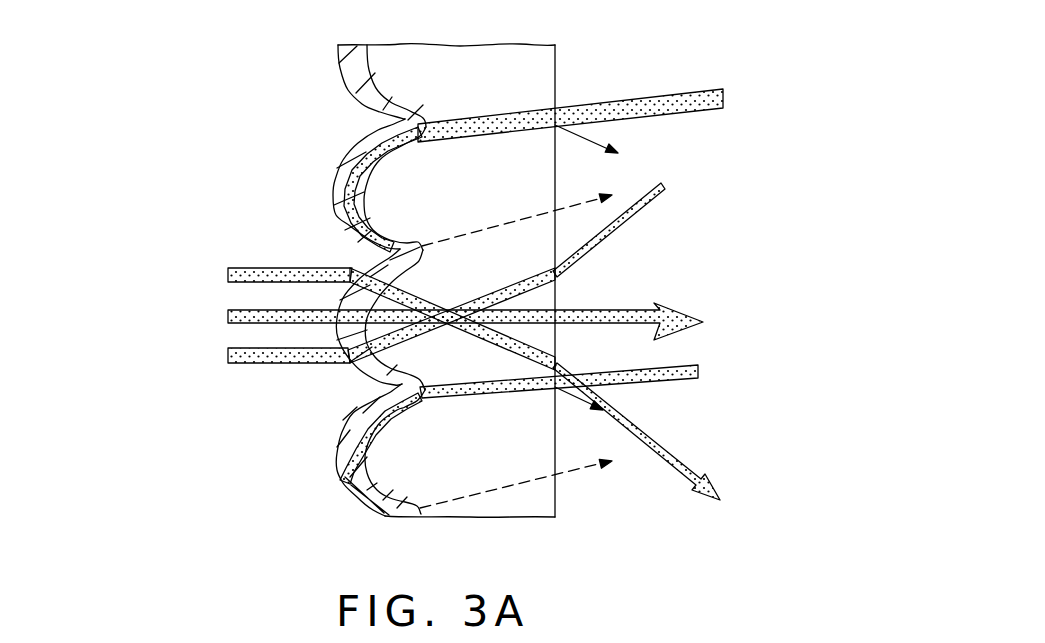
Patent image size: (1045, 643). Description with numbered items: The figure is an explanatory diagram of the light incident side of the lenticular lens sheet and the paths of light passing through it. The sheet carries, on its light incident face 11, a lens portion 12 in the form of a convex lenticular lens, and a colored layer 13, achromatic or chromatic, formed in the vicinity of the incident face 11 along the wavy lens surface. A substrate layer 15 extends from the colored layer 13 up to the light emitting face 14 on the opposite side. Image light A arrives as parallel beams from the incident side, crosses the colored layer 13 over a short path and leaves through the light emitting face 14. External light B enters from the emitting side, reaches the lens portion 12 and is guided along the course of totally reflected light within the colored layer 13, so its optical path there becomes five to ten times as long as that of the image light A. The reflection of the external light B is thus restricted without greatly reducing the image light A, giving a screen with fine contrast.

The light incident face 11 is at (335, 310).
The lens portion 12 is at (335, 496).
The colored layer 13 is at (380, 495).
The light emitting face 14 is at (557, 495).
The substrate layer 15 is at (543, 73).
The image light A is at (300, 268).
The external light B is at (663, 93).